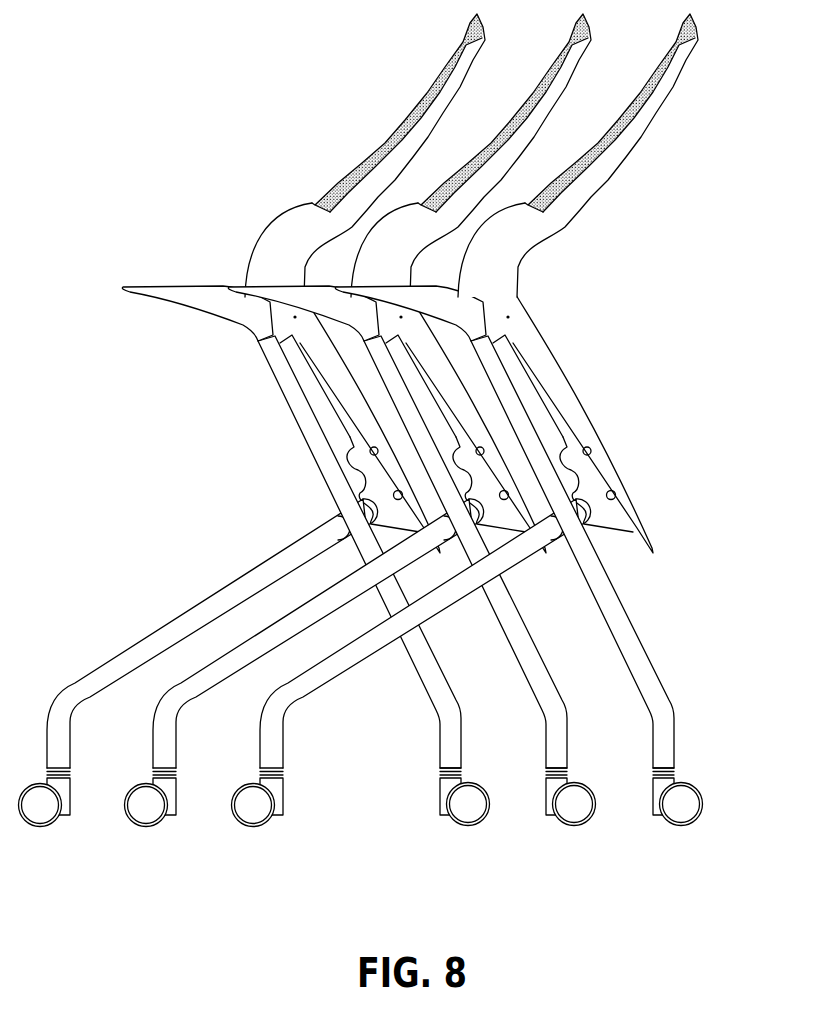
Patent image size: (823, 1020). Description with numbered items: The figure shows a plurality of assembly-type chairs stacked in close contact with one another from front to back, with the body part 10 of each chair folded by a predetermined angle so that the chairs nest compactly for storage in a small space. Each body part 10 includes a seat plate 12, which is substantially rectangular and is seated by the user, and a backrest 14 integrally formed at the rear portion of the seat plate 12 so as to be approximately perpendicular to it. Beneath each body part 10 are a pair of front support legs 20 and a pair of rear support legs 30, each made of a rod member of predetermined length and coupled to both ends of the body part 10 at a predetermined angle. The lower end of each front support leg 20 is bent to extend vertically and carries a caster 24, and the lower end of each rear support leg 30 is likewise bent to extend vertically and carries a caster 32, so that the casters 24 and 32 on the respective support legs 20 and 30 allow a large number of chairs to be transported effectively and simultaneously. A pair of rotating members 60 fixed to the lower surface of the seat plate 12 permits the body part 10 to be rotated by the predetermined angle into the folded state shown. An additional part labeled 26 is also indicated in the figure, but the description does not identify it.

The body part 10 is at (501, 422).
The seat plate 12 is at (567, 378).
The backrest 14 is at (583, 185).
The front support leg 20 is at (633, 612).
The caster 24 is at (700, 790).
The seat back connection 26 is at (468, 278).
The rear support leg 30 is at (520, 565).
The caster 32 is at (265, 800).
The rotating member 60 is at (603, 475).